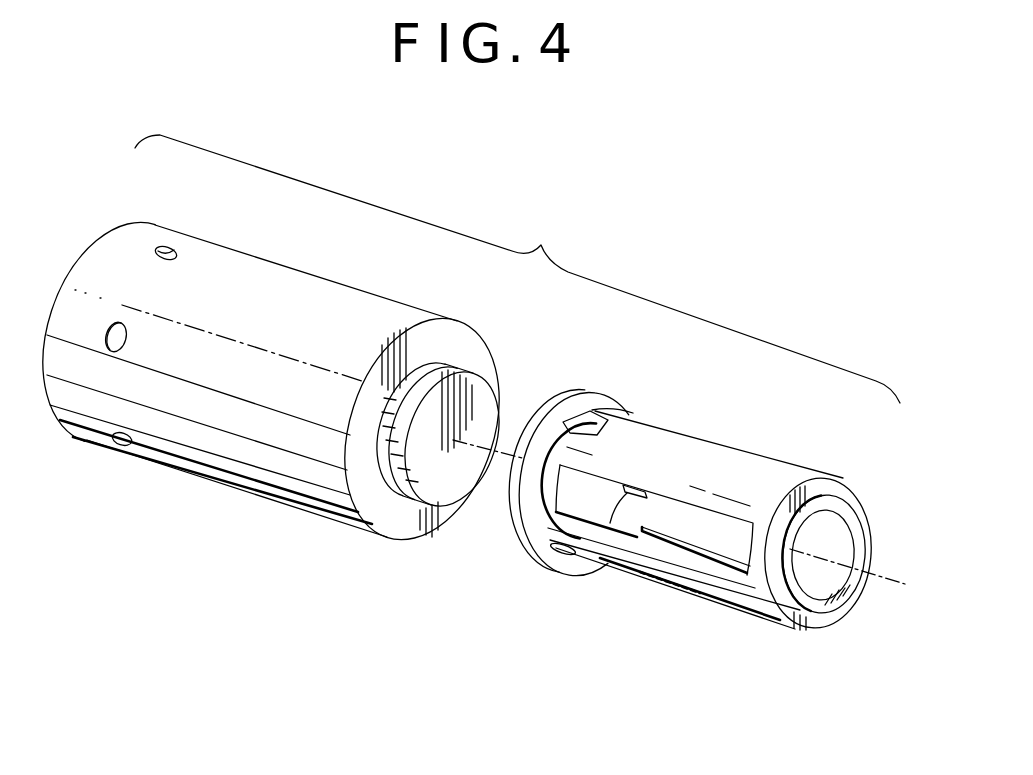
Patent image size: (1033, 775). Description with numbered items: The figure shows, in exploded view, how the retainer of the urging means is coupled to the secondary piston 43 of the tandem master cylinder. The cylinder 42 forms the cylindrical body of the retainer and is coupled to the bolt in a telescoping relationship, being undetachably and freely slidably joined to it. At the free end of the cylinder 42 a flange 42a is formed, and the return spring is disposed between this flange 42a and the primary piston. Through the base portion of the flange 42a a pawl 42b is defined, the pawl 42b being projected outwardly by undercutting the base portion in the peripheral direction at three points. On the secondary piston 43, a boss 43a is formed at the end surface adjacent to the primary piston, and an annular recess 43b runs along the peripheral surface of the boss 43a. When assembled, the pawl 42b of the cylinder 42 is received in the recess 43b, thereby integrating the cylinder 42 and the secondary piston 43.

The cylinder 42 is at (722, 458).
The flange 42a is at (633, 412).
The pawl 42b is at (578, 420).
The secondary piston 43 is at (300, 270).
The boss 43a is at (166, 252).
The annular recess 43b is at (438, 368).